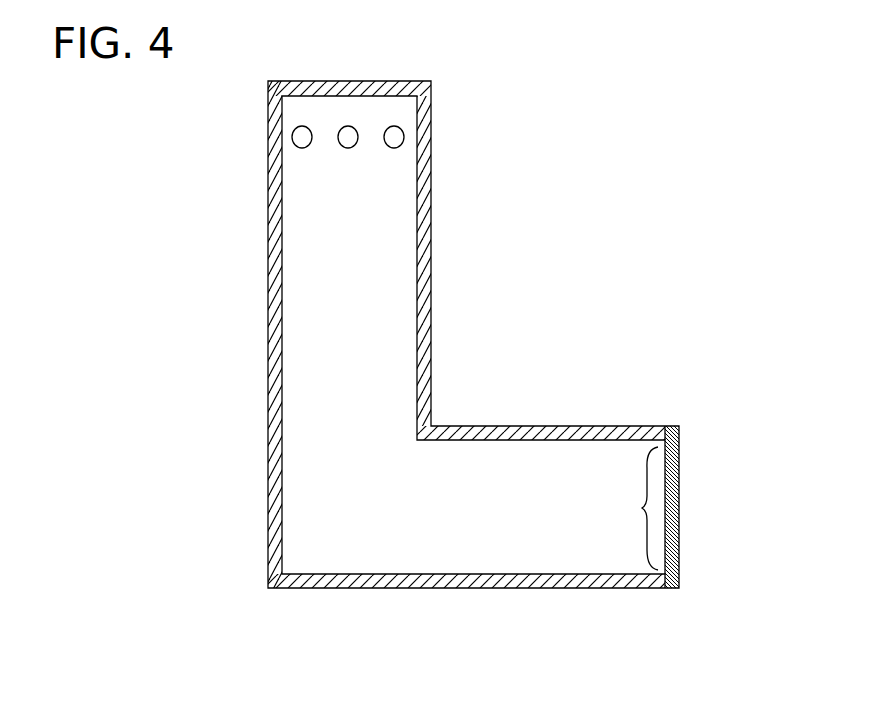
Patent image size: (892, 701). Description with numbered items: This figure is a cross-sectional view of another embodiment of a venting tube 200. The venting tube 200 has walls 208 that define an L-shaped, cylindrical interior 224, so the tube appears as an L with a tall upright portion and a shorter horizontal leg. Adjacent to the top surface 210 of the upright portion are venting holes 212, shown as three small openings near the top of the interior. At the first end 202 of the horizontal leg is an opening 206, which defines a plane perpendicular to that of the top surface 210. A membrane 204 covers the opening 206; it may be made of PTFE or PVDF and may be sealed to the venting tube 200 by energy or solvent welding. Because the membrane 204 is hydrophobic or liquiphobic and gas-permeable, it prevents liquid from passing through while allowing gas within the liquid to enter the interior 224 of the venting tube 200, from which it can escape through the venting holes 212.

The venting tube 200 is at (204, 328).
The first end 202 is at (699, 559).
The membrane 204 is at (678, 504).
The opening 206 is at (625, 508).
The walls 208 is at (595, 432).
The top surface 210 is at (347, 81).
The venting holes 212 is at (393, 148).
The interior 224 is at (322, 500).